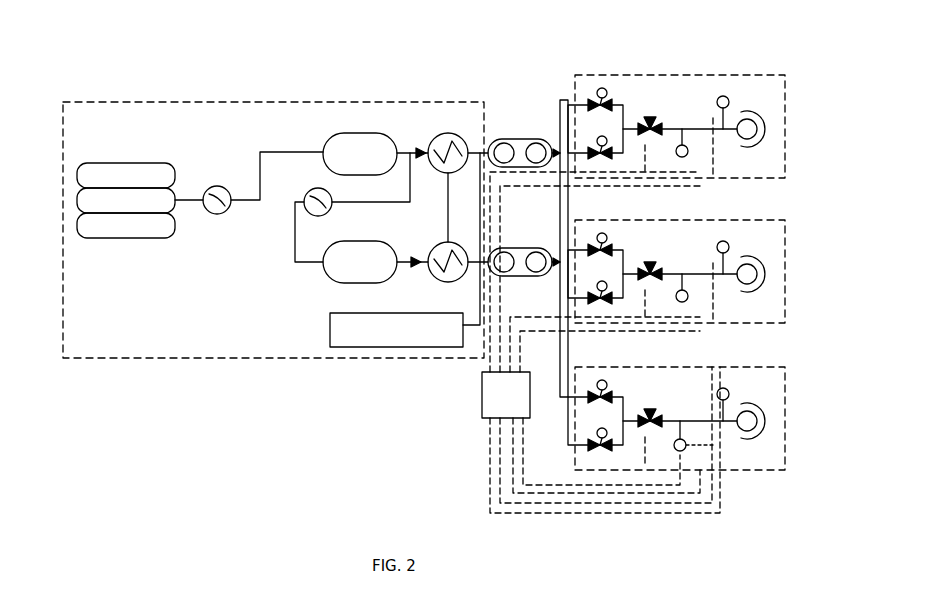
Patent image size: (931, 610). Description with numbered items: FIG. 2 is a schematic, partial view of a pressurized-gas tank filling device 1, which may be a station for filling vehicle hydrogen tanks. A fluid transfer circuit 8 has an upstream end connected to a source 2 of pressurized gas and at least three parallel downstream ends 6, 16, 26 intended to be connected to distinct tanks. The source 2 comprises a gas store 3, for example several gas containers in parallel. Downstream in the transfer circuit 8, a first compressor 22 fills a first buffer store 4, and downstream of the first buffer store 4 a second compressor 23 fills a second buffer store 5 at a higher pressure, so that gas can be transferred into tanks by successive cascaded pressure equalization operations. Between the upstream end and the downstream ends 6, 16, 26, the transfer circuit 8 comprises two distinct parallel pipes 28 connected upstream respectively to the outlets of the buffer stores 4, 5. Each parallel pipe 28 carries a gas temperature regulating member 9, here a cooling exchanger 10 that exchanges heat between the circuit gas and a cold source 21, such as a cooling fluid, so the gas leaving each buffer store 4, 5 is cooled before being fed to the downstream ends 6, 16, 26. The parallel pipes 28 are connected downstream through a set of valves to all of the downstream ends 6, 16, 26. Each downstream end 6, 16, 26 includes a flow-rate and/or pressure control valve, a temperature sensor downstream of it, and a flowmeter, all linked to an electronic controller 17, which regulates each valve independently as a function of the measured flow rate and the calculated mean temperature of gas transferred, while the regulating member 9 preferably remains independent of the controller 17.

The pressurized-gas tank filling device 1 is at (393, 409).
The source of pressurized gas 2 is at (238, 386).
The gas store 3 is at (130, 226).
The first buffer store 4 is at (335, 157).
The second buffer store 5 is at (300, 287).
The downstream end 6 is at (692, 118).
The fluid transfer circuit 8 is at (288, 150).
The gas temperature regulating member 9 is at (458, 142).
The cooling exchanger 10 is at (484, 133).
The downstream end 16 is at (697, 272).
The electronic controller 17 is at (601, 342).
The cold source 21 is at (396, 330).
The first compressor 22 is at (215, 186).
The second compressor 23 is at (340, 196).
The downstream end 26 is at (690, 418).
The parallel pipes 28 is at (416, 255).